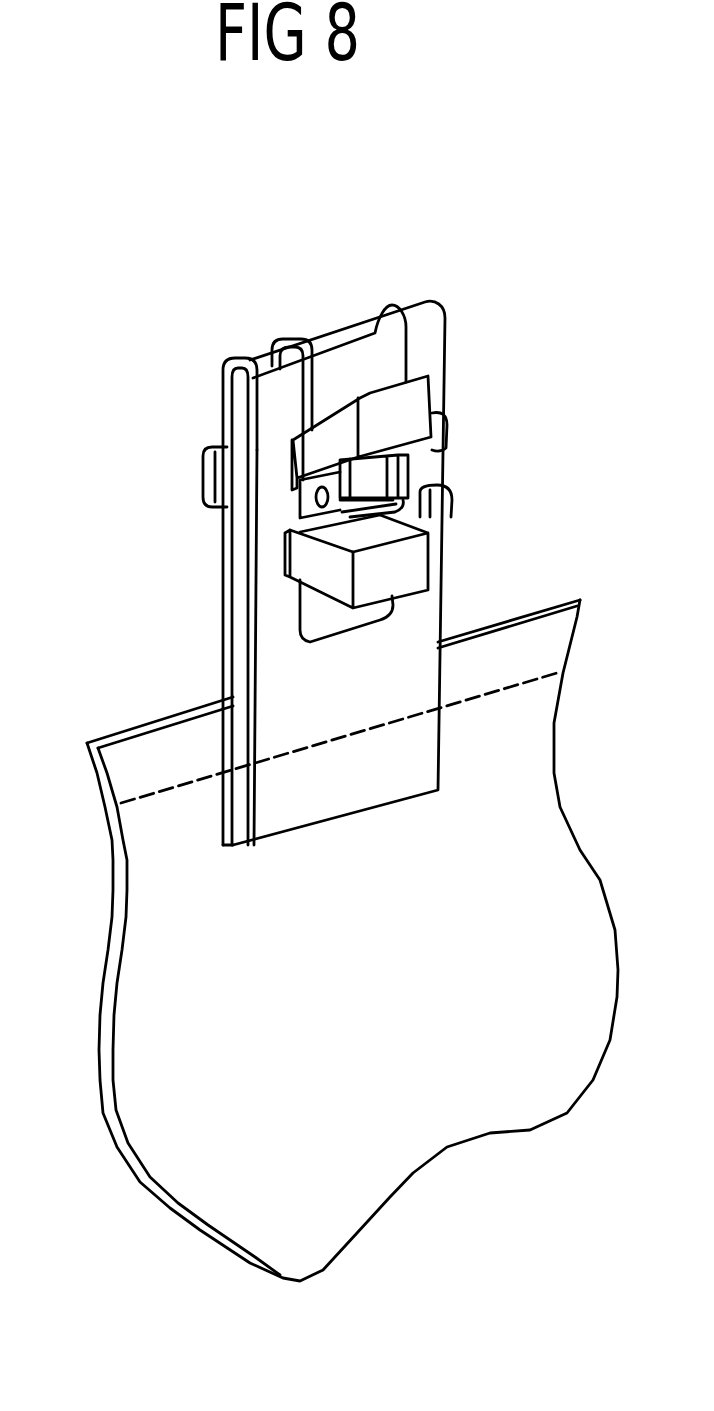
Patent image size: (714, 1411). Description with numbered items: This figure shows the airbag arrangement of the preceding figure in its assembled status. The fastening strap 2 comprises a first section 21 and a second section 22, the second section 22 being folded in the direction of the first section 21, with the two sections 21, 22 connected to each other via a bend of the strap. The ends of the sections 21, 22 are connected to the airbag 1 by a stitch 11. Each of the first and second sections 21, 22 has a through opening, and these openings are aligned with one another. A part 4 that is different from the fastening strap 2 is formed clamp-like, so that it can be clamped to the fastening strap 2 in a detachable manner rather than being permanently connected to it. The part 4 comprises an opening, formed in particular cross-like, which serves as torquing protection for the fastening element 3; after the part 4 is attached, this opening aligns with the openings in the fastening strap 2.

The airbag 1 is at (140, 1187).
The stitch 11 is at (203, 780).
The fastening strap 2 is at (248, 353).
The first section 21 is at (227, 540).
The second section 22 is at (430, 460).
The fastening element 3 is at (407, 563).
The part 4 is at (366, 370).